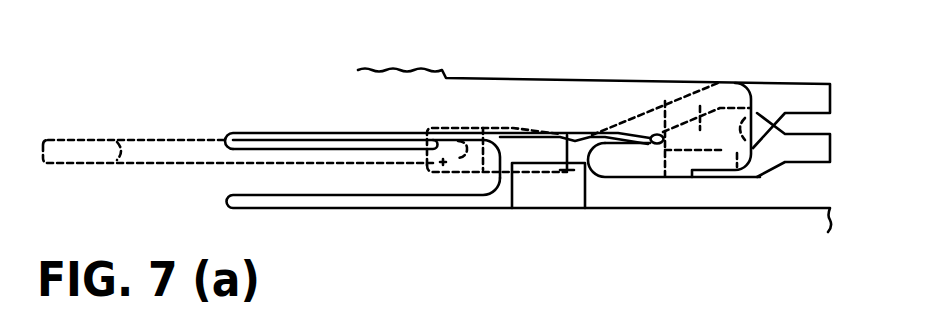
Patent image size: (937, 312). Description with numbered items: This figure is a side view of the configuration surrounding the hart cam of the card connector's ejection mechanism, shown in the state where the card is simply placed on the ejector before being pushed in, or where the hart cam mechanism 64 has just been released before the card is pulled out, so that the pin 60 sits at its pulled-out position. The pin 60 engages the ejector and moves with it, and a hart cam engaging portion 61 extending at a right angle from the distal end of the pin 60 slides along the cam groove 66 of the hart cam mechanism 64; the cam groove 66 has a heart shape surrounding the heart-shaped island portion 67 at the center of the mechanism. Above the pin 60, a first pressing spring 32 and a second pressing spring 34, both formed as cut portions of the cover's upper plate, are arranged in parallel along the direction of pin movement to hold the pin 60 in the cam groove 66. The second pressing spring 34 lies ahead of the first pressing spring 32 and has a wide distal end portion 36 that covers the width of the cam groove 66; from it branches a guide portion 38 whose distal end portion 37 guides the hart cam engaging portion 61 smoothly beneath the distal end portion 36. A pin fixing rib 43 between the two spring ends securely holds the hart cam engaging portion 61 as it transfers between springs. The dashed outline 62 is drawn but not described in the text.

The first pressing spring 32 is at (328, 187).
The second pressing spring 34 is at (525, 108).
The distal end portion 36 is at (730, 145).
The distal end portion 37 is at (610, 177).
The guide portion 38 is at (670, 177).
The pin fixing rib 43 is at (547, 203).
The pin 60 is at (256, 135).
The hart cam engaging portion 61 is at (442, 177).
The mating member 62 is at (82, 138).
The hart cam mechanism 64 is at (705, 72).
The cam groove 66 is at (681, 95).
The island portion 67 is at (736, 83).